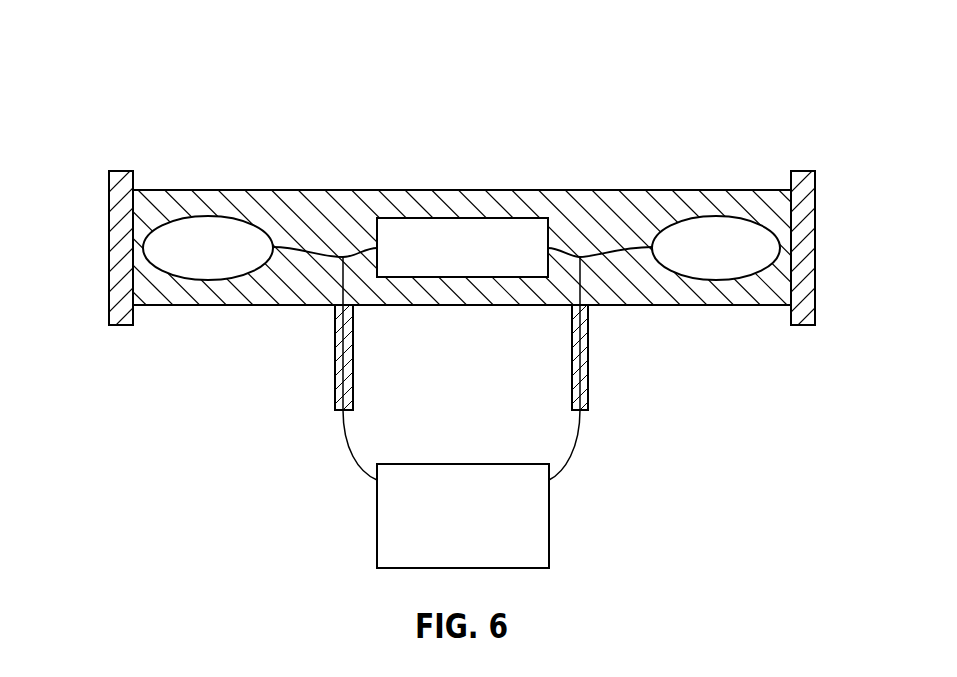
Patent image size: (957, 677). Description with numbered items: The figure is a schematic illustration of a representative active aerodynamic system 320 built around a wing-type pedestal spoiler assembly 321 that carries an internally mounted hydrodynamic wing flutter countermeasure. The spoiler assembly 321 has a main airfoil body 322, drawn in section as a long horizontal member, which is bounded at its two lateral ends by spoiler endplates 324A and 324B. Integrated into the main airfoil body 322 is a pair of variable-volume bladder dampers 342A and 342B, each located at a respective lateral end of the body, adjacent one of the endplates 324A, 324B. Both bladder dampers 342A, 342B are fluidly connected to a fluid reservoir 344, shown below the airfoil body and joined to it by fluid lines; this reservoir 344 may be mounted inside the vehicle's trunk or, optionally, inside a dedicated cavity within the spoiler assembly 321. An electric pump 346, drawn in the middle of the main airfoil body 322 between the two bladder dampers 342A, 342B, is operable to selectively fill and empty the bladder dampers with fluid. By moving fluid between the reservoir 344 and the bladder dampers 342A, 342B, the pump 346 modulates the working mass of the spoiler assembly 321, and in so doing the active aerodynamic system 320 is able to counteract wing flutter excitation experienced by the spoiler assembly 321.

The active aerodynamic system 320 is at (160, 44).
The wing-type pedestal spoiler assembly 321 is at (405, 176).
The main airfoil body 322 is at (497, 190).
The spoiler endplate 324A is at (120, 171).
The spoiler endplate 324B is at (803, 171).
The variable-volume bladder damper 342A is at (199, 216).
The variable-volume bladder damper 342B is at (725, 216).
The fluid reservoir 344 is at (377, 492).
The electric pump 346 is at (450, 218).